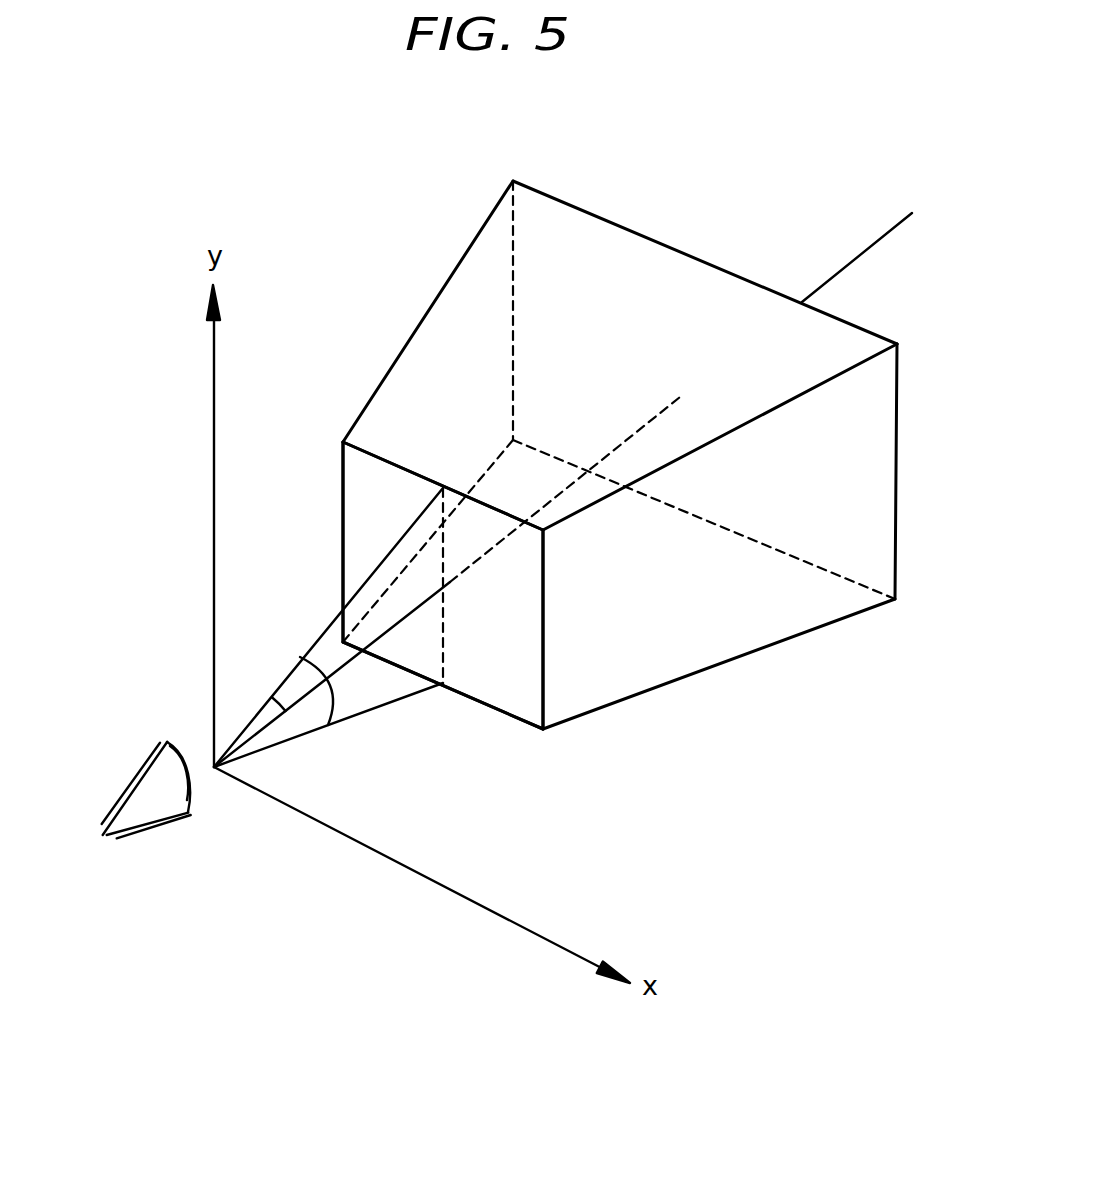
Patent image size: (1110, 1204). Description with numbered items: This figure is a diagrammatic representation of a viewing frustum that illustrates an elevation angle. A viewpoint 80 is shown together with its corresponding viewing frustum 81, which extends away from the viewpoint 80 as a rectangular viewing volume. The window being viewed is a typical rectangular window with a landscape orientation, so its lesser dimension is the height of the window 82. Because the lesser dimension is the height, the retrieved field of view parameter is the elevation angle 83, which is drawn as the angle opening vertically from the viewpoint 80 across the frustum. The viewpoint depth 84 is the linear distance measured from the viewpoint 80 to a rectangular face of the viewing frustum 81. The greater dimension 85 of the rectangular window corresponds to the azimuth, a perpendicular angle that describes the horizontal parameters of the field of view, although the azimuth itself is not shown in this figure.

The viewpoint 80 is at (138, 770).
The viewing frustum 81 is at (445, 283).
The height of the window 82 is at (547, 705).
The elevation angle 83 is at (328, 705).
The viewpoint depth 84 is at (272, 695).
The greater dimension of the rectangular window 85 is at (370, 450).